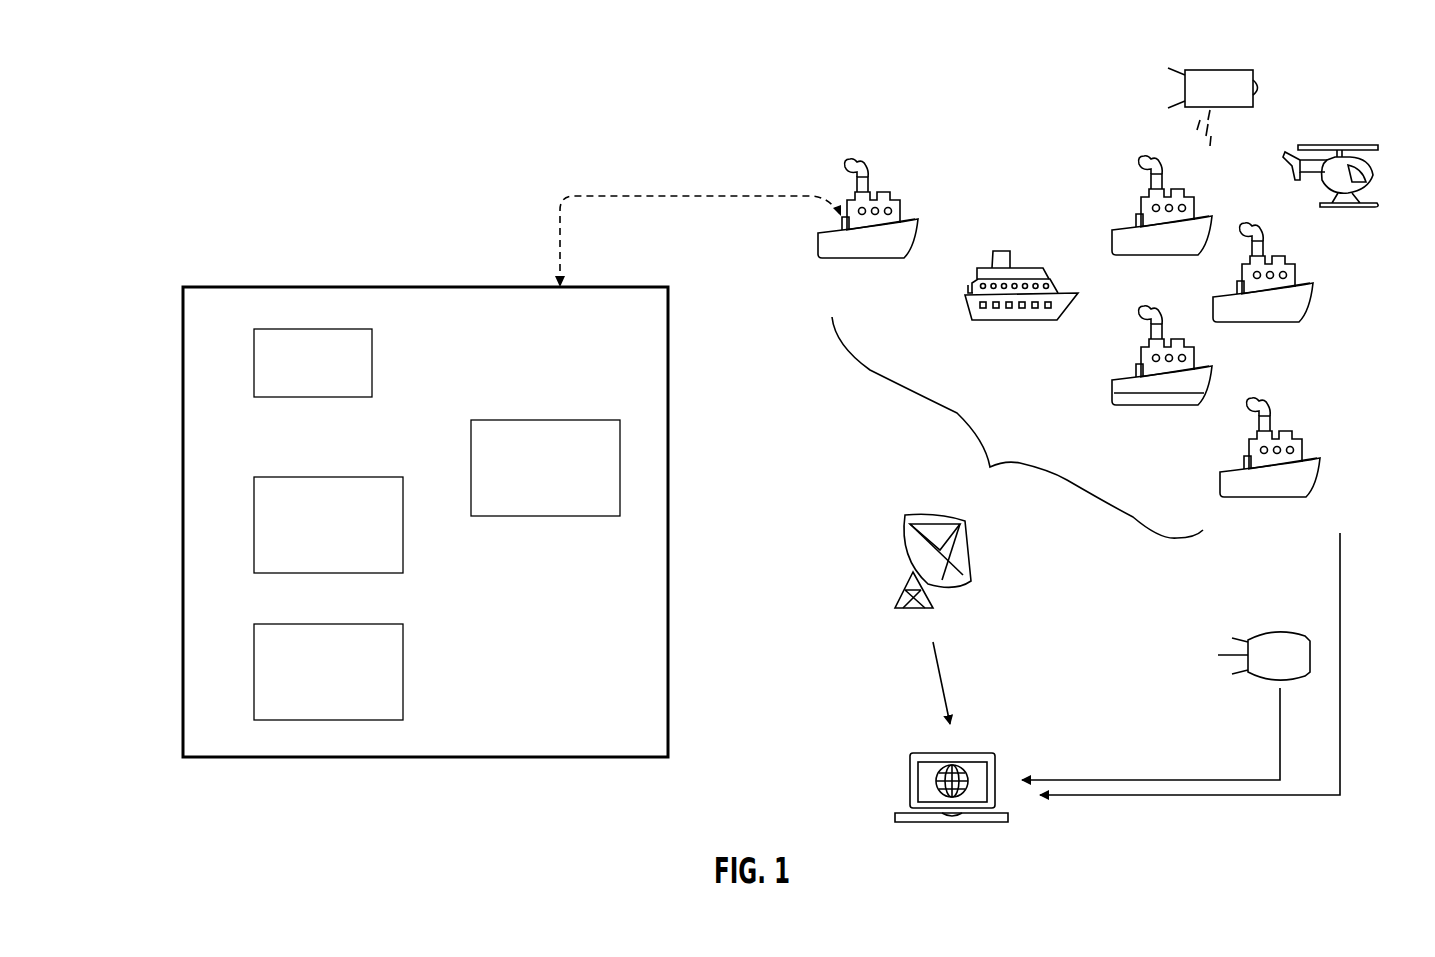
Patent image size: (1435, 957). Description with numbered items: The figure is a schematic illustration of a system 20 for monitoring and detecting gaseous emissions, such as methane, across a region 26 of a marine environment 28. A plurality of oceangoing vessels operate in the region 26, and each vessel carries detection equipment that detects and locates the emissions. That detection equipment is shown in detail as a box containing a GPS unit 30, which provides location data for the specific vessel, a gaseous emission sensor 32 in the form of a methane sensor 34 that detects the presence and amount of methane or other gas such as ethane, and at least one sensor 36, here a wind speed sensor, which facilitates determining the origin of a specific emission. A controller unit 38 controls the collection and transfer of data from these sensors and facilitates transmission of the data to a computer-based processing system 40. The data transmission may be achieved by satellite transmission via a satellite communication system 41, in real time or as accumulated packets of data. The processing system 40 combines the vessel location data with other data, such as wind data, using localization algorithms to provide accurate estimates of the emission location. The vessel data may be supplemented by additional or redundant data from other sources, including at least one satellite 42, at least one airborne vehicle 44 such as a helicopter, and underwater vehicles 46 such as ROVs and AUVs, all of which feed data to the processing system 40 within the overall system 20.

The system 20 is at (188, 92).
The region 26 is at (988, 382).
The marine environment 28 is at (778, 158).
The GPS unit 30 is at (301, 328).
The gaseous emission sensor 32 is at (410, 619).
The methane sensor 34 is at (302, 623).
The sensor 36 is at (302, 476).
The controller unit 38 is at (519, 419).
The processing system 40 is at (882, 738).
The satellite communication system 41 is at (875, 548).
The satellite 42 is at (1217, 70).
The airborne vehicle 44 is at (1367, 175).
The underwater vehicle 46 is at (1266, 632).